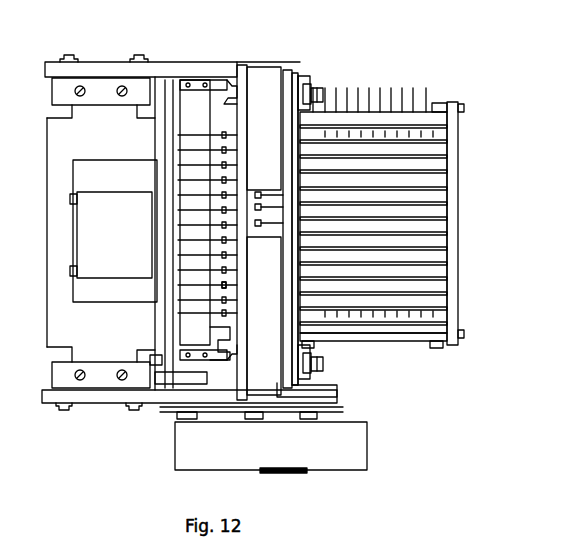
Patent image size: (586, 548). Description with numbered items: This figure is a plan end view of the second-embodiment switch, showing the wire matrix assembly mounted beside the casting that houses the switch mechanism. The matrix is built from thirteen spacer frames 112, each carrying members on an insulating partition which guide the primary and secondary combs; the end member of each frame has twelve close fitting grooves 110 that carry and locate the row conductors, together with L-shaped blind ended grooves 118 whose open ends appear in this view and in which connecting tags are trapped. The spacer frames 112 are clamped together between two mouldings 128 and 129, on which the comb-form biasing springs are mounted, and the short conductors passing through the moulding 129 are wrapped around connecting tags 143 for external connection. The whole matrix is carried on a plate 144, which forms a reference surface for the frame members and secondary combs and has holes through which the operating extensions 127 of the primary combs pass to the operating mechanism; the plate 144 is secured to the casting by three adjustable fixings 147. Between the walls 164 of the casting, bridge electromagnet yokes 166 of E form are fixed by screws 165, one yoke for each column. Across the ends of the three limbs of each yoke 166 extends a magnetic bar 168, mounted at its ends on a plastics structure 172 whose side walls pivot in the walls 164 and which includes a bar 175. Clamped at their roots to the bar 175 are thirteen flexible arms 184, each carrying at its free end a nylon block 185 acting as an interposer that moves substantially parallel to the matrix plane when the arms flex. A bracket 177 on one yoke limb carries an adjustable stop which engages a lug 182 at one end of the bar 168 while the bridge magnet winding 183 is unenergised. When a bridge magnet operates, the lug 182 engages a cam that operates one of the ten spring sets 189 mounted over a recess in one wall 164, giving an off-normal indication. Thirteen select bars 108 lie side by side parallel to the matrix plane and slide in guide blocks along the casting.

The select bars 108 is at (225, 285).
The close fitting grooves 110 is at (420, 311).
The spacer frames 112 is at (443, 272).
The L-shaped blind ended grooves 118 is at (403, 147).
The operating extensions 127 is at (270, 190).
The moulding 128 is at (405, 329).
The moulding 129 is at (447, 112).
The connecting tag 143 is at (380, 86).
The plate 144 is at (298, 72).
The adjustable fixings 147 is at (320, 87).
The walls 164 is at (193, 68).
The screws 165 is at (133, 57).
The bridge electromagnet yokes 166 is at (60, 245).
The magnetic bar 168 is at (192, 113).
The plastics structure 172 is at (232, 332).
The bar 175 is at (173, 137).
The bracket 177 is at (157, 368).
The lug 182 is at (168, 380).
The bridge magnet winding 183 is at (93, 205).
The arms 184 is at (195, 183).
The nylon block 185 is at (265, 237).
The spring sets 189 is at (357, 445).